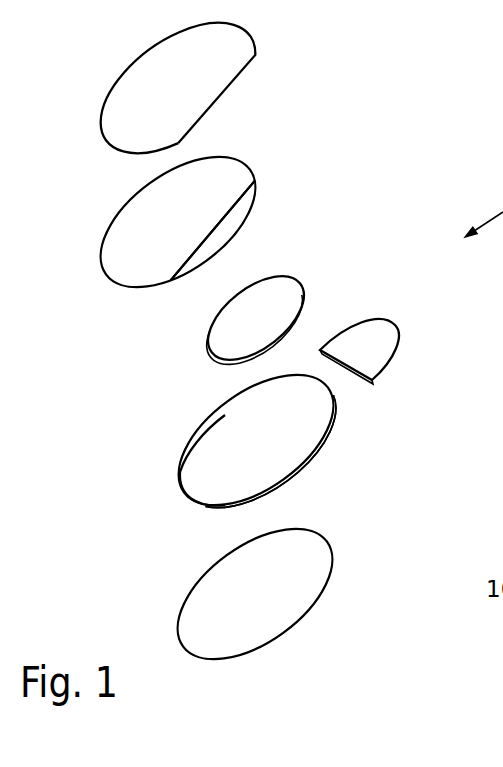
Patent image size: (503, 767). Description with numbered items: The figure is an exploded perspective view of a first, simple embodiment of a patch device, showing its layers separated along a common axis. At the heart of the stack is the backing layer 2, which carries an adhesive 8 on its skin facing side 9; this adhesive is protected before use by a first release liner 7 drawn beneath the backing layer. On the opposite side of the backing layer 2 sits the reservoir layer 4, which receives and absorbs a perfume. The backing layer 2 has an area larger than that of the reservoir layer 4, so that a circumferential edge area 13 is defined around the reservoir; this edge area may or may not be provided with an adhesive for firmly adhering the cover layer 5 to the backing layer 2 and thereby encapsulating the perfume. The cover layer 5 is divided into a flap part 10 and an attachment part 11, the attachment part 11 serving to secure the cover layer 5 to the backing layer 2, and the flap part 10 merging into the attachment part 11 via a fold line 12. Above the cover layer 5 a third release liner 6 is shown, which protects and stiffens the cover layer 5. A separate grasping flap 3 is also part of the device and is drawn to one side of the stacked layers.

The flap part 10 is at (122, 243).
The third release liner 6 is at (233, 62).
The cover layer 5 is at (232, 165).
The fold line 12 is at (233, 210).
The attachment part 11 is at (213, 247).
The reservoir layer 4 is at (232, 335).
The grasping flap 3 is at (382, 342).
The backing layer 2 is at (300, 442).
The adhesive 8 is at (303, 467).
The circumferential edge area 13 is at (190, 465).
The skin facing side 9 is at (198, 502).
The first release liner 7 is at (307, 555).